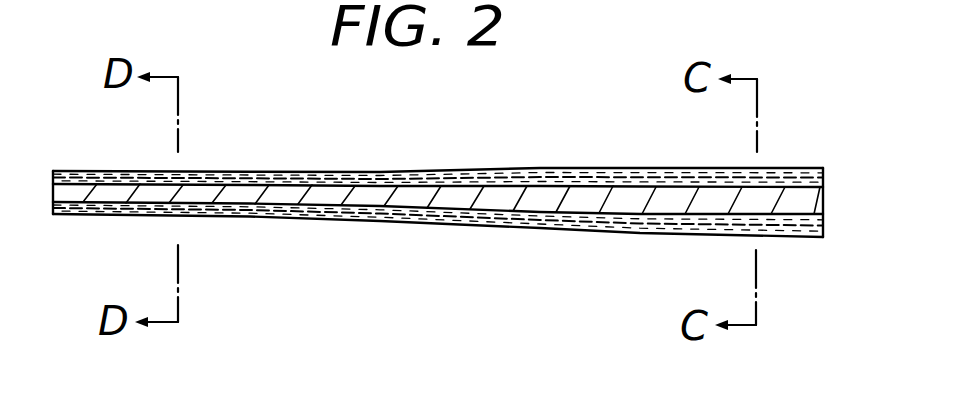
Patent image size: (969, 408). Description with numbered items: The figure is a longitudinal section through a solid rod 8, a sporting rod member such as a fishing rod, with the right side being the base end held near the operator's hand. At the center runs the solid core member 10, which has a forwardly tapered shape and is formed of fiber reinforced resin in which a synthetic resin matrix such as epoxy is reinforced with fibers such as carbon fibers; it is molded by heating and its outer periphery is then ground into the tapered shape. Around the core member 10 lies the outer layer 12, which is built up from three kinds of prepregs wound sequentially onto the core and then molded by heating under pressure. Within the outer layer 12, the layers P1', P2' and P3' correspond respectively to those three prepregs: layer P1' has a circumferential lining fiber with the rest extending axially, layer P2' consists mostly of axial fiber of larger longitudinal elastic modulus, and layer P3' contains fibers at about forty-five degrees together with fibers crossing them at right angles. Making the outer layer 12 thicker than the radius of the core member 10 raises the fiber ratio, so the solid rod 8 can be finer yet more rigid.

The solid rod 8 is at (438, 220).
The solid core member 10 is at (415, 197).
The outer layer 12 is at (438, 284).
The layer P1' is at (516, 265).
The layer P2' is at (581, 266).
The layer P3' is at (639, 268).